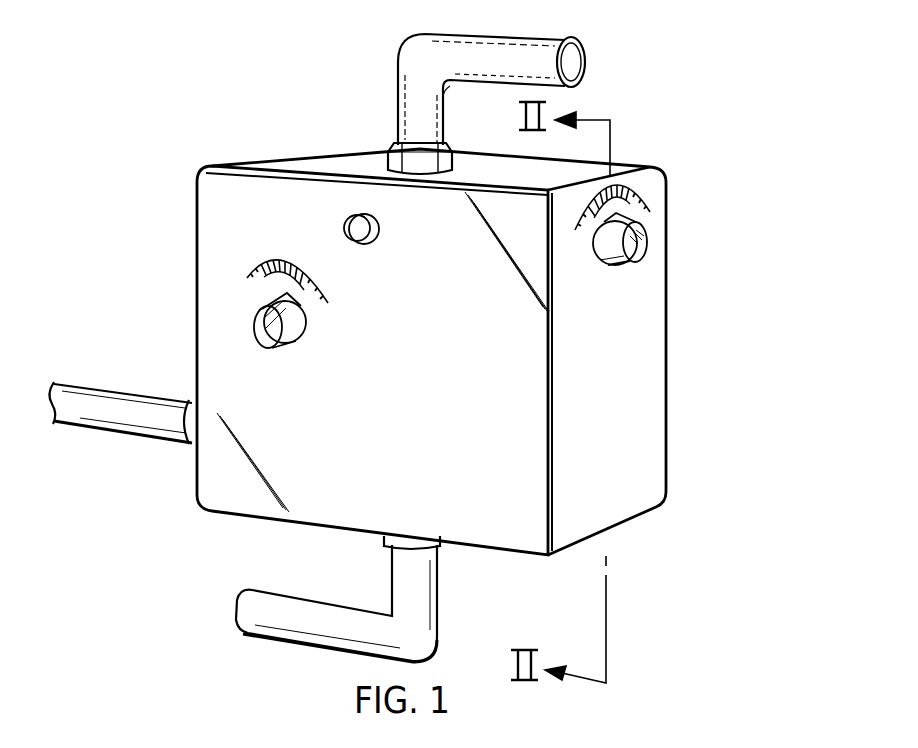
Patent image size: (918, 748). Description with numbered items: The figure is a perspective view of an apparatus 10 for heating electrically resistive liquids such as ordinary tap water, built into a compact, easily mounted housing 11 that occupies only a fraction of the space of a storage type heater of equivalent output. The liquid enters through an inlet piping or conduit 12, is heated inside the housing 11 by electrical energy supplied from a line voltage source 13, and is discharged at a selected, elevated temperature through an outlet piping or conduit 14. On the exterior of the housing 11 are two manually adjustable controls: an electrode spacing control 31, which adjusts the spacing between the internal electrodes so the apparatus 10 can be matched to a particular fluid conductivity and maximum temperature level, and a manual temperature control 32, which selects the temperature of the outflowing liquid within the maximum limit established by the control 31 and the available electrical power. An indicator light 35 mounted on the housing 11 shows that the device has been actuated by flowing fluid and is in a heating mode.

The apparatus 10 is at (348, 78).
The housing 11 is at (668, 310).
The inlet piping or conduit 12 is at (302, 610).
The line voltage source 13 is at (88, 393).
The outlet piping or conduit 14 is at (565, 40).
The electrode spacing control 31 is at (642, 240).
The manual temperature control 32 is at (262, 320).
The indicator light 35 is at (356, 226).